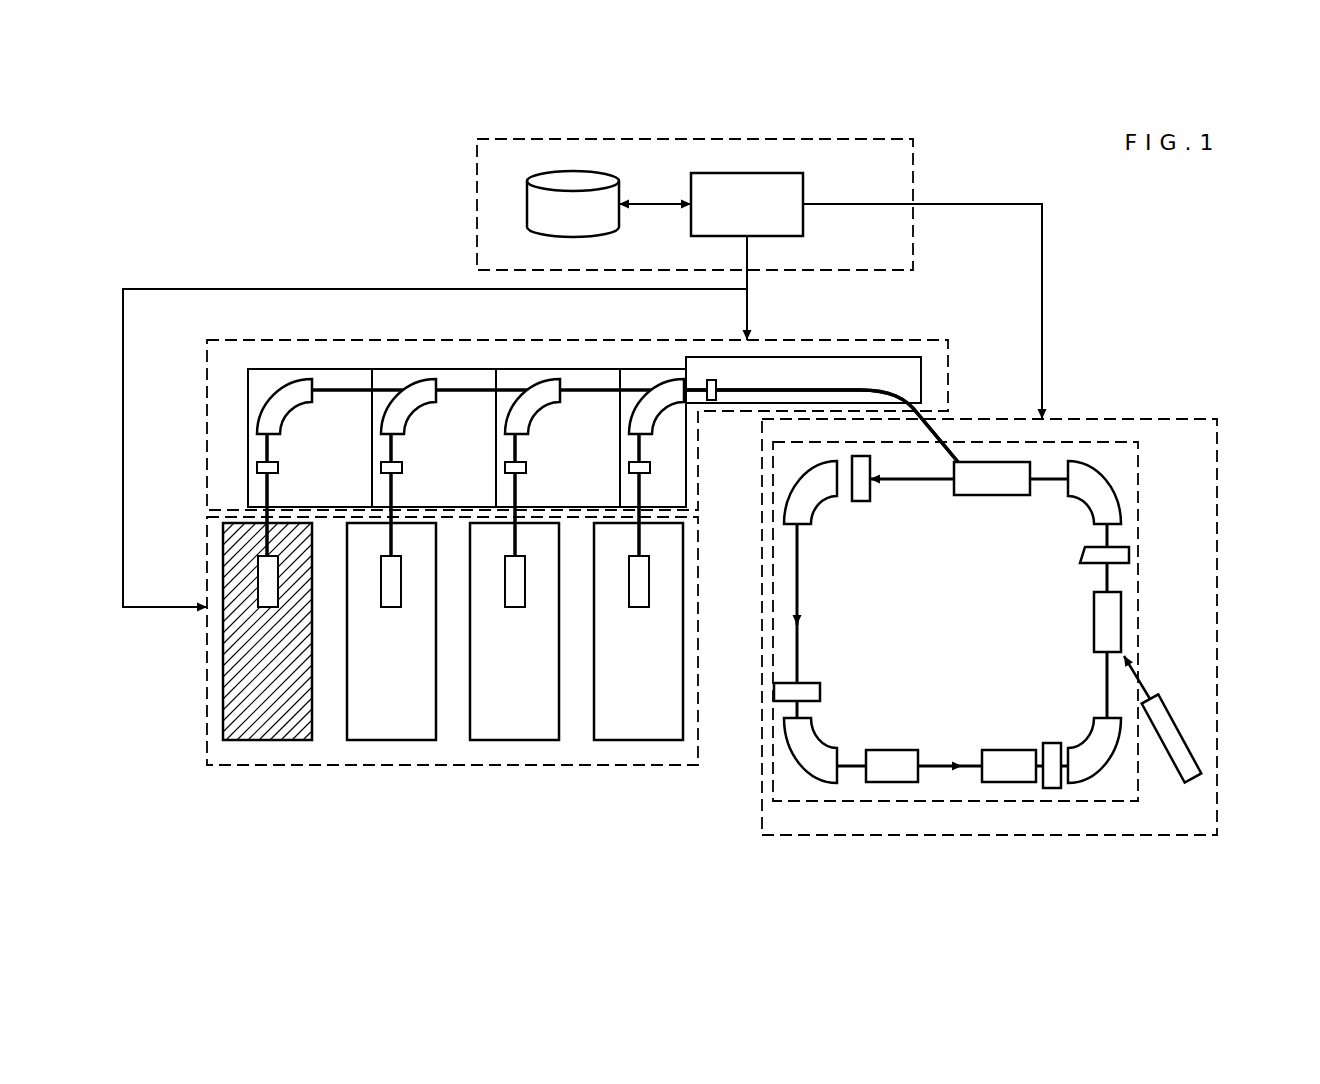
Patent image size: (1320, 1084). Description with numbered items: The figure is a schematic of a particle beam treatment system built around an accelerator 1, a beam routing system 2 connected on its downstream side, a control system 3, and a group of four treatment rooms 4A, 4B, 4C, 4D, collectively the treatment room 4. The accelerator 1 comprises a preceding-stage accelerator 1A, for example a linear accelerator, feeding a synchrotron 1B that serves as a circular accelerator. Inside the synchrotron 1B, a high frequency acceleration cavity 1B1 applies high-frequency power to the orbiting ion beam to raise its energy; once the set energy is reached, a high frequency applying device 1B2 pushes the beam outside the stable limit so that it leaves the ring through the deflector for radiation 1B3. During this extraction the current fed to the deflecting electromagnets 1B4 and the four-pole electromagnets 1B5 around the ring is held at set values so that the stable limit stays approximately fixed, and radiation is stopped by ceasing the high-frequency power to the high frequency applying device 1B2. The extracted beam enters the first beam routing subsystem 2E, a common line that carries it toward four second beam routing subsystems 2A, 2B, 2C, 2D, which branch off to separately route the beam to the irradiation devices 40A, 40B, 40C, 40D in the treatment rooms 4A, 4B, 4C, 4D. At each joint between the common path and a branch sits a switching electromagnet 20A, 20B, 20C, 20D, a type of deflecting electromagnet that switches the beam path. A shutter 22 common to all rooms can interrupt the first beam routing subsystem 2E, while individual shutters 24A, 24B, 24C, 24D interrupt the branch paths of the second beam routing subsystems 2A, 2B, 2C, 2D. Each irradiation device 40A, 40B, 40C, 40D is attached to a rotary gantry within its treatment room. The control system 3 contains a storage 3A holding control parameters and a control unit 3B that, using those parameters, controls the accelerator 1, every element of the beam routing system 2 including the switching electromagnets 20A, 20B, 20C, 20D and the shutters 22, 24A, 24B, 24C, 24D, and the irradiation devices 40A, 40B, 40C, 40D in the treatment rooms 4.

The accelerator 1 is at (1172, 418).
The preceding-stage accelerator 1A is at (1175, 770).
The synchrotron 1B is at (1138, 584).
The high frequency acceleration cavity 1B1 is at (894, 782).
The high frequency applying device 1B2 is at (1002, 782).
The deflector for radiation 1B3 is at (990, 462).
The deflecting electromagnet 1B4 is at (792, 502).
The four-pole electromagnet 1B5 is at (852, 461).
The beam routing system 2 is at (207, 354).
The second beam routing subsystem 2A is at (248, 398).
The second beam routing subsystem 2B is at (416, 365).
The second beam routing subsystem 2C is at (540, 365).
The second beam routing subsystem 2D is at (663, 365).
The first beam routing subsystem 2E is at (871, 356).
The control system 3 is at (477, 150).
The storage 3A is at (585, 171).
The control unit 3B is at (770, 173).
The treatment room 4 is at (207, 562).
The treatment room 4A is at (268, 740).
The treatment room 4B is at (392, 740).
The treatment room 4C is at (516, 740).
The treatment room 4D is at (640, 740).
The switching electromagnet 20A is at (283, 386).
The switching electromagnet 20B is at (407, 386).
The switching electromagnet 20C is at (531, 386).
The switching electromagnet 20D is at (655, 386).
The shutter 22 is at (711, 380).
The shutter 24A is at (257, 466).
The shutter 24B is at (381, 465).
The shutter 24C is at (505, 465).
The shutter 24D is at (629, 465).
The irradiation device 40A is at (267, 598).
The irradiation device 40B is at (392, 598).
The irradiation device 40C is at (516, 598).
The irradiation device 40D is at (640, 598).